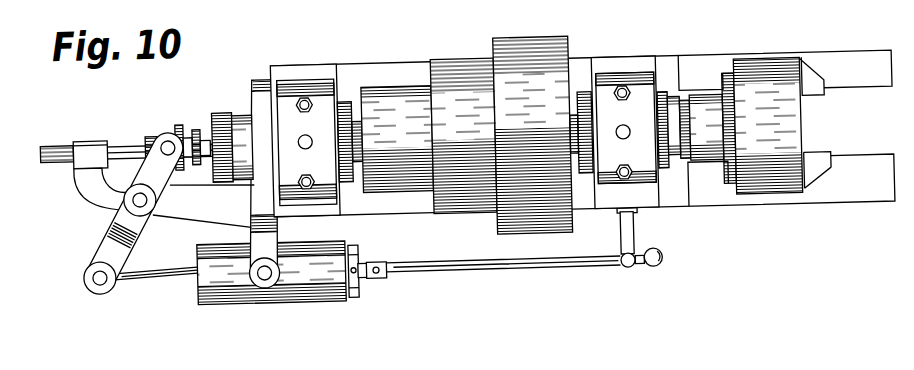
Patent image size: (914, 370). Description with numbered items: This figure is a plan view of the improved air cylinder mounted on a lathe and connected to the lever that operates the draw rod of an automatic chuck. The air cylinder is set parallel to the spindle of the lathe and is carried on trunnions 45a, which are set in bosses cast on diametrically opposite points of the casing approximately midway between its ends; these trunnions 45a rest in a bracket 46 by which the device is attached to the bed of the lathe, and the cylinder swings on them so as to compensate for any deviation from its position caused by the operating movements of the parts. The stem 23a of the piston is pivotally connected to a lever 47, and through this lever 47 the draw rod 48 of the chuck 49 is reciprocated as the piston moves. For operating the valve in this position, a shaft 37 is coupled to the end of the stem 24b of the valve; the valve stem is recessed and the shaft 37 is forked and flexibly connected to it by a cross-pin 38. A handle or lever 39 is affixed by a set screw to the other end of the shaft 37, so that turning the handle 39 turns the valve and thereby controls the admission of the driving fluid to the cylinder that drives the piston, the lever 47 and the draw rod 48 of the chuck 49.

The draw rod 48 is at (120, 136).
The bracket 46 is at (245, 210).
The lever 47 is at (102, 238).
The stem of the piston 23a is at (153, 275).
The trunnions 45a is at (261, 277).
The cross-pin 38 is at (379, 258).
The stem of the valve 24b is at (358, 276).
The shaft 37 is at (498, 274).
The handle or lever 39 is at (651, 278).
The chuck 49 is at (795, 128).